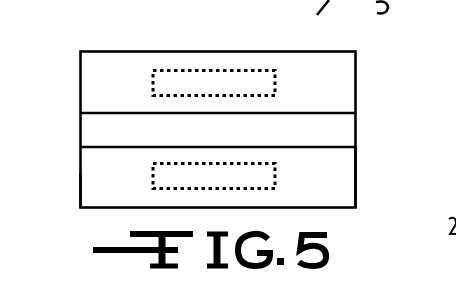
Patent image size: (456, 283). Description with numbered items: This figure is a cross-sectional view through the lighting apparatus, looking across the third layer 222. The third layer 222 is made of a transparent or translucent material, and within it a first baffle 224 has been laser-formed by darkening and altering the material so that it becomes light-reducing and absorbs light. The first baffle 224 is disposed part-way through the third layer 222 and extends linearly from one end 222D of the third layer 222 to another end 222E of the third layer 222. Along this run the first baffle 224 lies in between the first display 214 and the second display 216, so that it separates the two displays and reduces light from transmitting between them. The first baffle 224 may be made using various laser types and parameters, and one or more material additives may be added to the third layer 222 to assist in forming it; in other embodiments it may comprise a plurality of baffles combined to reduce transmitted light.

The first display 214 is at (230, 70).
The second display 216 is at (270, 170).
The third layer 222 is at (108, 66).
The one end of the third layer 222D is at (82, 173).
The another end of the third layer 222E is at (356, 168).
The first baffle 224 is at (331, 127).